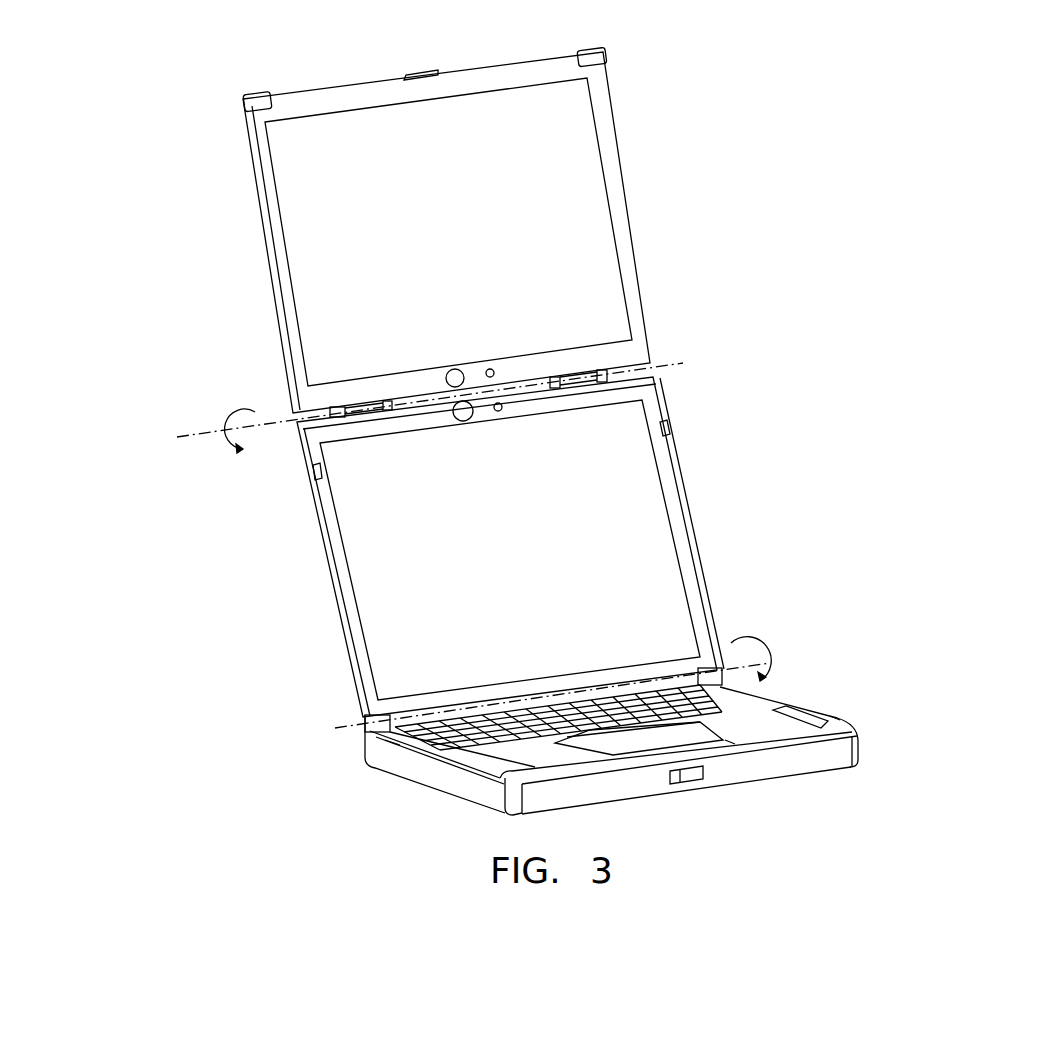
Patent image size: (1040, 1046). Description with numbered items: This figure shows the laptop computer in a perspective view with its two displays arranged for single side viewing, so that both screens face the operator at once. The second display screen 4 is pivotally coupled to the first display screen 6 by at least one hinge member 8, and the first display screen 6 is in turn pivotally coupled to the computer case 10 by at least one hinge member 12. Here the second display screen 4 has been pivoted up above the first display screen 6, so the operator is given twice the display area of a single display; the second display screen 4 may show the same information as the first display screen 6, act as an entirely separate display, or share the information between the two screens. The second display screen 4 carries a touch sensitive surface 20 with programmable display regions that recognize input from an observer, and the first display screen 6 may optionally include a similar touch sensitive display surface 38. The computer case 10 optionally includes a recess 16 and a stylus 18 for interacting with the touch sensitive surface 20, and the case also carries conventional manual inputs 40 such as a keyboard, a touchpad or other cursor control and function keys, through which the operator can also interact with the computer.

The second display screen 4 is at (620, 233).
The first display screen 6 is at (677, 502).
The hinge member 8 is at (613, 370).
The computer case 10 is at (493, 763).
The hinge member 12 is at (722, 670).
The recess 16 is at (808, 718).
The stylus 18 is at (837, 718).
The touch sensitive surface 20 is at (502, 237).
The touch sensitive display surface 38 is at (528, 569).
The manual inputs 40 is at (400, 745).